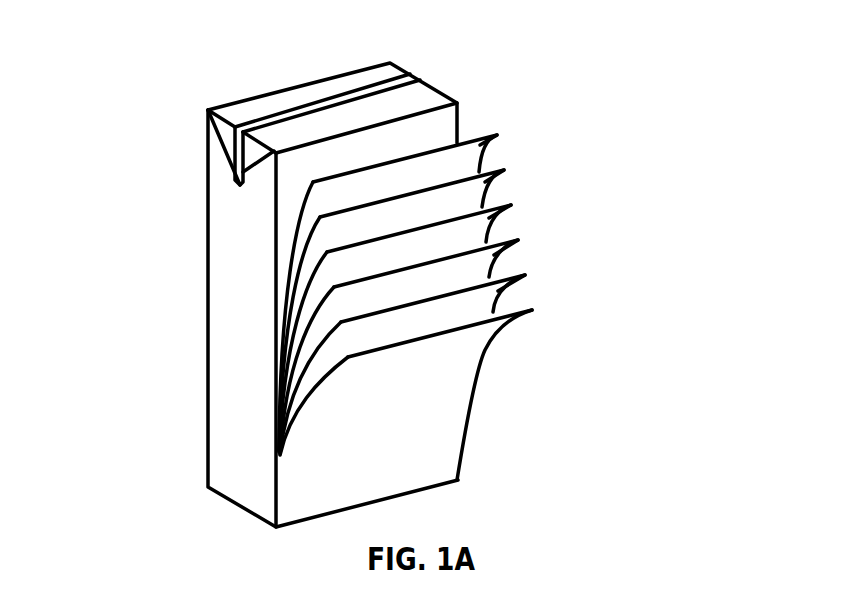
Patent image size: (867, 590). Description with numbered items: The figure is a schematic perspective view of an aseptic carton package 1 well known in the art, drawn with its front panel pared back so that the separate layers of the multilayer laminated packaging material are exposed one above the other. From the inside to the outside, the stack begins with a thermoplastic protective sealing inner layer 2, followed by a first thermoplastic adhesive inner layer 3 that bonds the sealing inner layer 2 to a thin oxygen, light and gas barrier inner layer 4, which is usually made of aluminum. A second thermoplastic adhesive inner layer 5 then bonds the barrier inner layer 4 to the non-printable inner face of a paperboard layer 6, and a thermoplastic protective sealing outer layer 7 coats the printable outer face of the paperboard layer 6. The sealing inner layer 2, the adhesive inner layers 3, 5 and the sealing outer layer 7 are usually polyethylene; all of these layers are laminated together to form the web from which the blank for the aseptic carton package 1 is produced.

The aseptic carton package 1 is at (137, 89).
The thermoplastic protective sealing inner layer 2 is at (475, 157).
The first thermoplastic adhesive inner layer 3 is at (487, 188).
The oxygen, light and gas barrier inner layer 4 is at (497, 221).
The second thermoplastic adhesive inner layer 5 is at (496, 253).
The paperboard layer 6 is at (498, 293).
The thermoplastic protective sealing outer layer 7 is at (485, 335).